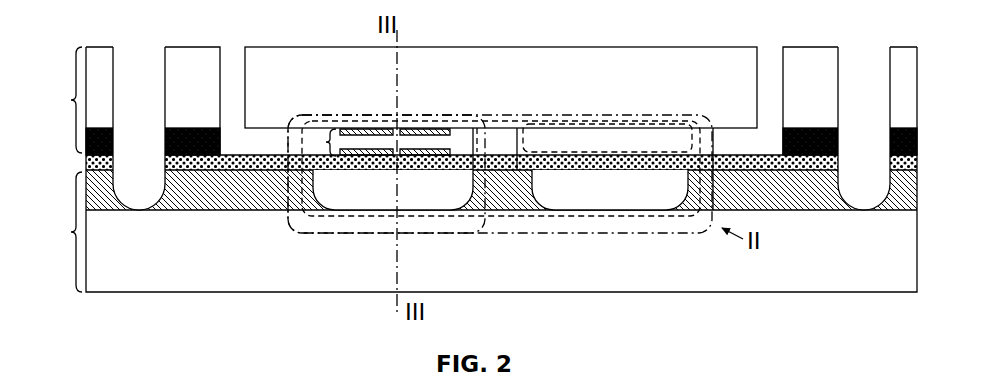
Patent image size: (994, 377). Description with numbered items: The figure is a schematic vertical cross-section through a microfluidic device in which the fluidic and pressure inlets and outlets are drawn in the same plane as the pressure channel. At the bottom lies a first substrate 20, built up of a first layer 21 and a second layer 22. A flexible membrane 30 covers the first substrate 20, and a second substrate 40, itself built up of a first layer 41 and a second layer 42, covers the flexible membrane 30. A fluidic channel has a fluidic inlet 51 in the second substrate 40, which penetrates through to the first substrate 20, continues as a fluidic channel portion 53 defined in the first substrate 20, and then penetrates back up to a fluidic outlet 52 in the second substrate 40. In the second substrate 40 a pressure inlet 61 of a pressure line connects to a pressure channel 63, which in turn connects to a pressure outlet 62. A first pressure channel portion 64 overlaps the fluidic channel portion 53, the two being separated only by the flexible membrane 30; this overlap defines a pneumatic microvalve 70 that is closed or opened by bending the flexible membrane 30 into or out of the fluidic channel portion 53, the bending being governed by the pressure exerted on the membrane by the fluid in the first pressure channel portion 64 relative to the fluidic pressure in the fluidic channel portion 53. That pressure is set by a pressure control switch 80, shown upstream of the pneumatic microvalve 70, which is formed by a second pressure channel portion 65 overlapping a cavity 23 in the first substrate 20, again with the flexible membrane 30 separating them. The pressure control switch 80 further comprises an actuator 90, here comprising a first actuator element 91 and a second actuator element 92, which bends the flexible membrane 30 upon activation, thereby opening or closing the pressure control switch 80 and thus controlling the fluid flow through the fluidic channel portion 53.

The first substrate 20 is at (57, 232).
The first layer 21 is at (336, 277).
The second layer 22 is at (238, 206).
The cavity 23 is at (417, 198).
The flexible membrane 30 is at (86, 162).
The second substrate 40 is at (474, 100).
The first layer 41 is at (167, 145).
The second layer 42 is at (330, 77).
The fluidic inlet 51 is at (146, 50).
The fluidic outlet 52 is at (866, 56).
The fluidic channel portion 53 is at (613, 201).
The pressure inlet 61 is at (229, 50).
The pressure outlet 62 is at (772, 54).
The pressure channel 63 is at (254, 146).
The first pressure channel portion 64 is at (588, 133).
The second pressure channel portion 65 is at (463, 128).
The pneumatic microvalve 70 is at (702, 123).
The pressure control switch 80 is at (482, 117).
The actuator 90 is at (373, 142).
The first actuator element 91 is at (371, 157).
The second actuator element 92 is at (382, 128).